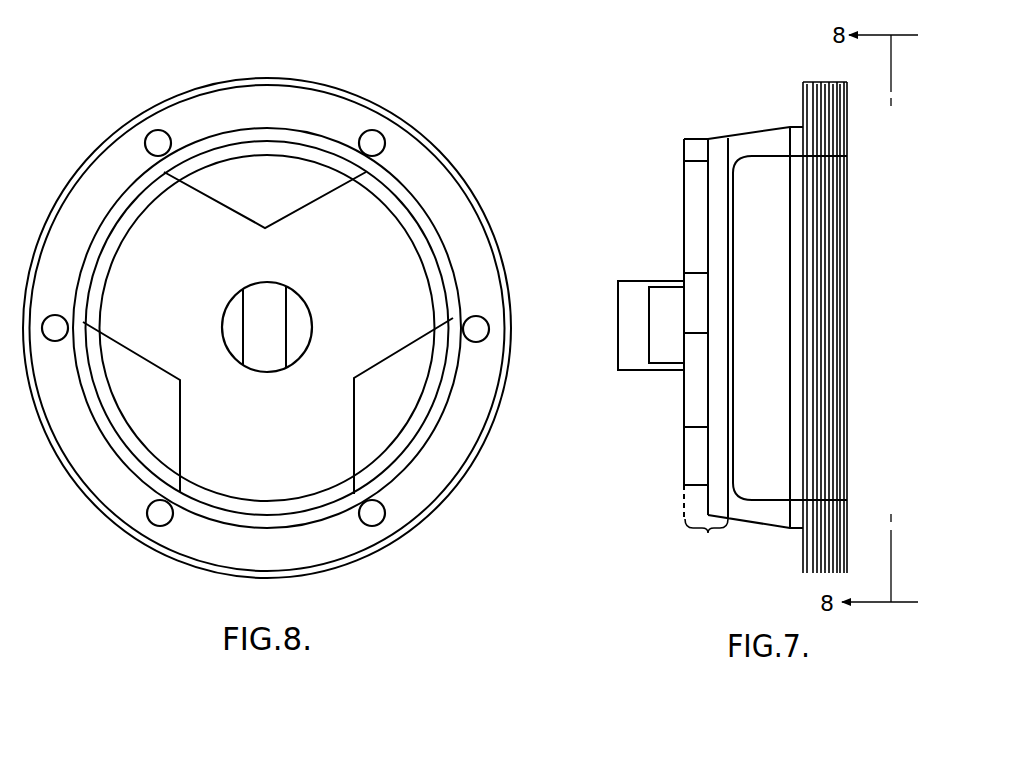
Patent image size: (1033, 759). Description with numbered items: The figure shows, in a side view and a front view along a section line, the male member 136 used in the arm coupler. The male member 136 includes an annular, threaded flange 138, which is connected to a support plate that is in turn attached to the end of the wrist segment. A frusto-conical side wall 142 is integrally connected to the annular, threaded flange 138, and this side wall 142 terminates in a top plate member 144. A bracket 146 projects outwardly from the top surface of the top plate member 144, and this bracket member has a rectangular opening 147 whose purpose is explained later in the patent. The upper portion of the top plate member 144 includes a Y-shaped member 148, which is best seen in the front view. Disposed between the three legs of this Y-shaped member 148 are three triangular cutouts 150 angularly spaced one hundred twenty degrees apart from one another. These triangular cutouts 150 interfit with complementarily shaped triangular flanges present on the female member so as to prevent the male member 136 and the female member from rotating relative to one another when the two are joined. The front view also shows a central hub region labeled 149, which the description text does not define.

In FIG. 8, the male member 136 is at (171, 95).
In FIG. 7, the male member 136 is at (697, 134).
In FIG. 8, the annular, threaded flange 138 is at (452, 163).
In FIG. 7, the annular, threaded flange 138 is at (814, 575).
In FIG. 7, the frusto-conical side wall 142 is at (772, 142).
In FIG. 8, the top plate member 144 is at (230, 205).
In FIG. 7, the top plate member 144 is at (706, 541).
In FIG. 7, the bracket 146 is at (636, 293).
In FIG. 7, the rectangular opening 147 is at (670, 343).
In FIG. 7, the Y-shaped member 148 is at (697, 212).
In FIG. 8, the central hub 149 is at (284, 262).
In FIG. 8, the triangular cutouts 150 is at (152, 426).